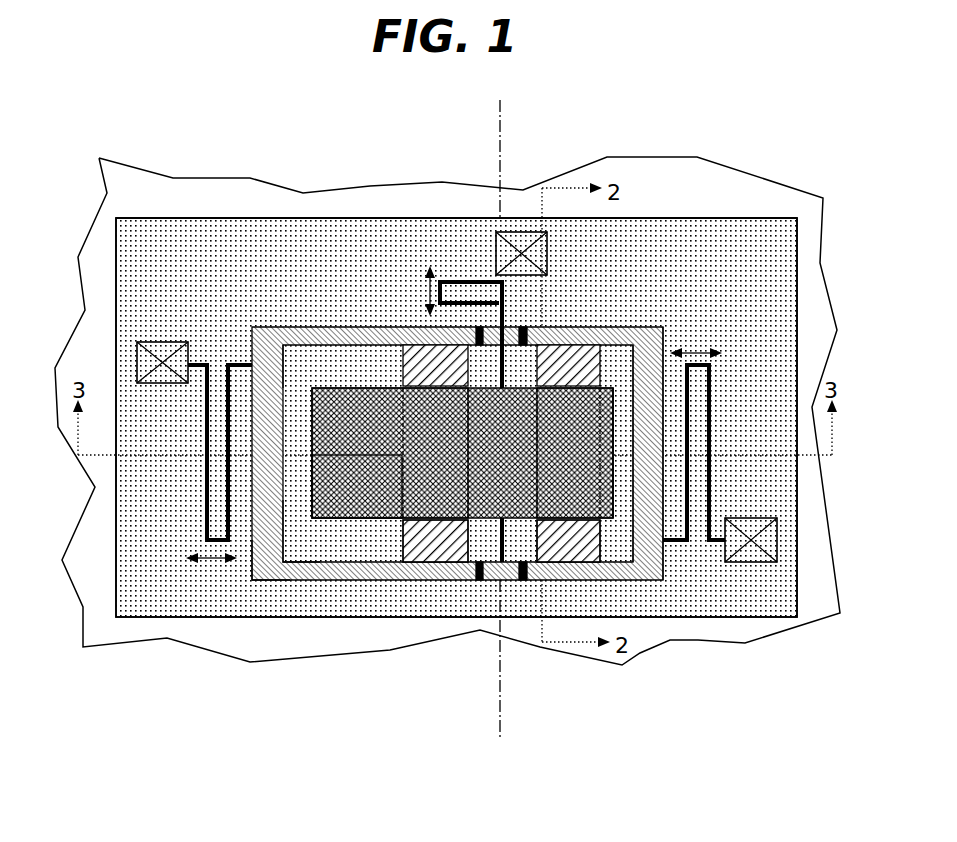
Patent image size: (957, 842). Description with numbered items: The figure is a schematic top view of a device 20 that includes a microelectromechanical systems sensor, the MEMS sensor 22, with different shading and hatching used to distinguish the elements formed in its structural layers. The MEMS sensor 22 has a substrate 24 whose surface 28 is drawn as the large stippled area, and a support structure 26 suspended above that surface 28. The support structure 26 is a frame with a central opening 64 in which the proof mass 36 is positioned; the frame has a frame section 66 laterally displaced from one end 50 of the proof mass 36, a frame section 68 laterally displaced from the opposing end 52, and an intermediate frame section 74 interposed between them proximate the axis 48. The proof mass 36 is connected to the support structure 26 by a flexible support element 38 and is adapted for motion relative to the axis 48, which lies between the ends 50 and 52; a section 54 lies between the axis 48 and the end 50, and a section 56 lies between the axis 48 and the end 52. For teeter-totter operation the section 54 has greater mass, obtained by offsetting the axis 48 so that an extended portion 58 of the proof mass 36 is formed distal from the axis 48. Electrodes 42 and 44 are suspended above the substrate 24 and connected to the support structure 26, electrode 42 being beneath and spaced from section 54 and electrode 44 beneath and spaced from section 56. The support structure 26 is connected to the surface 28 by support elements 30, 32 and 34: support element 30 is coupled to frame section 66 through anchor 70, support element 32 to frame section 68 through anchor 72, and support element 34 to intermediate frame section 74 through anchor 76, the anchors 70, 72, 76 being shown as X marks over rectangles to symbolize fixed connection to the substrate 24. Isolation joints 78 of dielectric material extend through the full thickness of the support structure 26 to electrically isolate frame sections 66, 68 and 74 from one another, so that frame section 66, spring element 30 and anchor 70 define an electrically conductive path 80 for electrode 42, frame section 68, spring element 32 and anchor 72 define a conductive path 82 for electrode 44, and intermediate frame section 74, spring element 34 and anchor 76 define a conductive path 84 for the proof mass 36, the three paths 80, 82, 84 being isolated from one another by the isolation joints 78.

The device 20 is at (123, 165).
The MEMS sensor 22 is at (740, 212).
The substrate 24 is at (760, 218).
The support structure 26 is at (252, 327).
The surface 28 is at (456, 417).
The support element 30 is at (207, 475).
The support element 32 is at (687, 525).
The support element 34 is at (455, 282).
The proof mass 36 is at (337, 397).
The flexible support element 38 is at (501, 453).
The electrode 42 is at (415, 538).
The electrode 44 is at (602, 548).
The axis 48 is at (502, 712).
The end 50 is at (312, 505).
The end 52 is at (613, 487).
The section 54 is at (390, 453).
The section 56 is at (575, 453).
The extended portion 58 is at (340, 498).
The central opening 64 is at (303, 350).
The frame section 66 is at (250, 580).
The frame section 68 is at (663, 340).
The anchor 70 is at (147, 342).
The anchor 72 is at (742, 562).
The intermediate frame section 74 is at (512, 327).
The anchor 76 is at (510, 232).
The isolation joints 78 is at (476, 330).
The electrically conductive path 80 is at (218, 560).
The electrically conductive path 82 is at (700, 352).
The electrically conductive path 84 is at (428, 305).